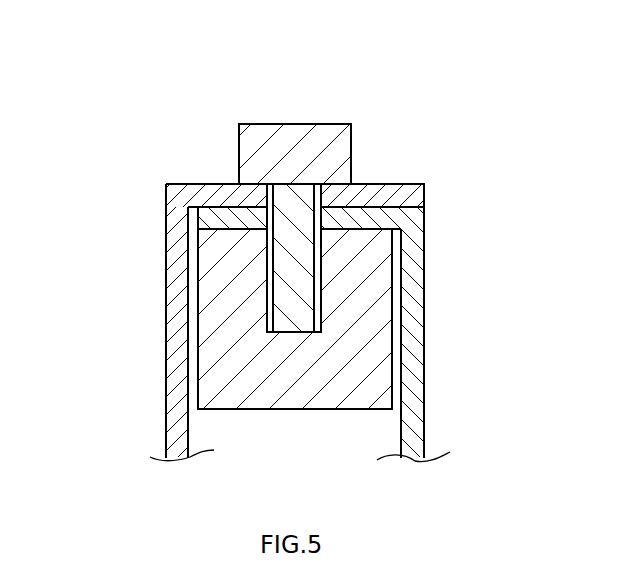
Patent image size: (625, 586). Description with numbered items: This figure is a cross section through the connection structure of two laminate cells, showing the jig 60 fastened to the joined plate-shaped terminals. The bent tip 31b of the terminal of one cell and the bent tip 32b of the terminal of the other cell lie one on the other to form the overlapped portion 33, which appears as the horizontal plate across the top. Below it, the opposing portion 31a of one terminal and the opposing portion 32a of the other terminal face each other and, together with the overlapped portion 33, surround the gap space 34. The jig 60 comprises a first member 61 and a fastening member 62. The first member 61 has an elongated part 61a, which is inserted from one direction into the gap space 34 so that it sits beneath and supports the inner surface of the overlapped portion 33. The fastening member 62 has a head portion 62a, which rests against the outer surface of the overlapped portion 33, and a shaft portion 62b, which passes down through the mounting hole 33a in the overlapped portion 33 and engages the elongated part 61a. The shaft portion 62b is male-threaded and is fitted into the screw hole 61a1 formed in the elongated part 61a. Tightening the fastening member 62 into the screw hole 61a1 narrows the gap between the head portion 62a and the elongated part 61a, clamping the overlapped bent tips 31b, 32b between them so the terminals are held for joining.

The jig 60 is at (259, 97).
The fastening member 62 is at (338, 122).
The head portion 62a is at (293, 124).
The shaft portion 62b is at (316, 292).
The overlapped portion 33 is at (390, 180).
The mounting hole 33a is at (263, 196).
The opposing portion 31a is at (166, 330).
The bent tip 31b is at (410, 184).
The opposing portion 32a is at (424, 369).
The bent tip 32b is at (204, 207).
The gap space 34 is at (189, 426).
The first member 61 is at (327, 422).
The elongated part 61a is at (393, 289).
The screw hole 61a1 is at (268, 318).